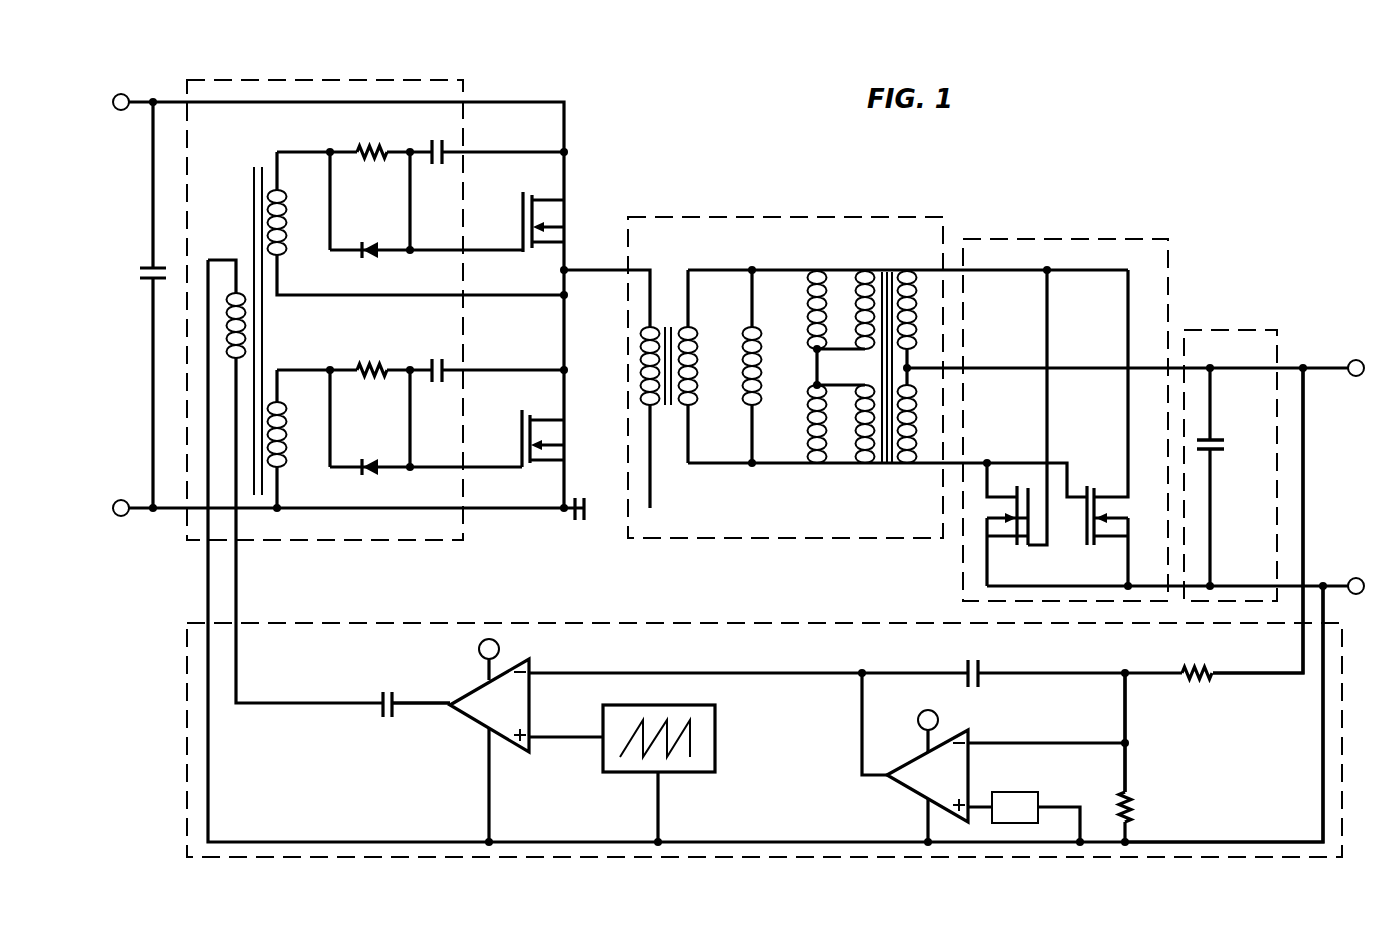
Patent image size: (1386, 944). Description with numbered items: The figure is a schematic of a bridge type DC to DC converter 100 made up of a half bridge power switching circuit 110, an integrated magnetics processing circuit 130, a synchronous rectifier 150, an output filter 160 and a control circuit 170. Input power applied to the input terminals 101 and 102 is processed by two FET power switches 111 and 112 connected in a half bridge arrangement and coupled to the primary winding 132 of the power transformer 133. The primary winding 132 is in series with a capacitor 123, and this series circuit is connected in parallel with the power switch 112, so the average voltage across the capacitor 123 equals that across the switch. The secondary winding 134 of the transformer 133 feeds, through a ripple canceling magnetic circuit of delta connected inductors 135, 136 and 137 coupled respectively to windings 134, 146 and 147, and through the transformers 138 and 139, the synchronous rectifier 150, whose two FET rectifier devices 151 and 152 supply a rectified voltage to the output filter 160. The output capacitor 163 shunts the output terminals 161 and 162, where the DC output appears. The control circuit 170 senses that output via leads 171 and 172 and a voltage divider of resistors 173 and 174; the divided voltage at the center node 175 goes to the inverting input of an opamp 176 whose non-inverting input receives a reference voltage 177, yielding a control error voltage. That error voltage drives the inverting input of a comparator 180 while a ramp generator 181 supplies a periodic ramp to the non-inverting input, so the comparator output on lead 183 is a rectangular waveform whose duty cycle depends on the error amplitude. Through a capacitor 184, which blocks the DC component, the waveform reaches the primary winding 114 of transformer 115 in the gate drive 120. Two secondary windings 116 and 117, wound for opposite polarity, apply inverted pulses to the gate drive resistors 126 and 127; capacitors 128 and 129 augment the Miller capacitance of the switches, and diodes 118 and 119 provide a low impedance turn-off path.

The converter 100 is at (932, 157).
The input terminal 101 is at (123, 84).
The input terminal 102 is at (123, 492).
The half bridge power switching circuit 110 is at (573, 92).
The power switch 111 is at (540, 207).
The power switch 112 is at (536, 424).
The primary winding 114 is at (220, 286).
The transformer 115 is at (278, 140).
The secondary winding 116 is at (293, 209).
The secondary winding 117 is at (293, 423).
The diode 118 is at (373, 233).
The diode 119 is at (366, 452).
The gate drive 120 is at (358, 60).
The capacitor 123 is at (583, 494).
The gate drive resistor 126 is at (370, 135).
The gate drive resistor 127 is at (368, 354).
The capacitor 128 is at (438, 136).
The capacitor 129 is at (433, 355).
The integrated magnetics processing circuit 130 is at (931, 197).
The primary winding 132 is at (622, 366).
The transformer 133 is at (690, 262).
The secondary winding 134 is at (705, 332).
The inductor 135 is at (709, 401).
The inductor 136 is at (768, 324).
The inductor 137 is at (768, 402).
The transformer 138 is at (886, 352).
The transformer 139 is at (886, 442).
The transformer winding 146 is at (818, 292).
The transformer winding 147 is at (814, 442).
The synchronous rectifier 150 is at (1151, 217).
The FET rectifier device 151 is at (1021, 534).
The FET rectifier device 152 is at (1099, 534).
The output filter 160 is at (1262, 360).
The output terminal 161 is at (1357, 353).
The output terminal 162 is at (1356, 572).
The output capacitor 163 is at (1229, 448).
The control circuit 170 is at (481, 605).
The lead 171 is at (1258, 520).
The lead 172 is at (1224, 714).
The resistor 173 is at (1198, 656).
The resistor 174 is at (1147, 807).
The center node 175 is at (1147, 732).
The opamp 176 is at (920, 766).
The reference voltage 177 is at (1040, 793).
The comparator 180 is at (513, 695).
The ramp generator 181 is at (686, 738).
The lead 183 is at (421, 721).
The capacitor 184 is at (389, 687).